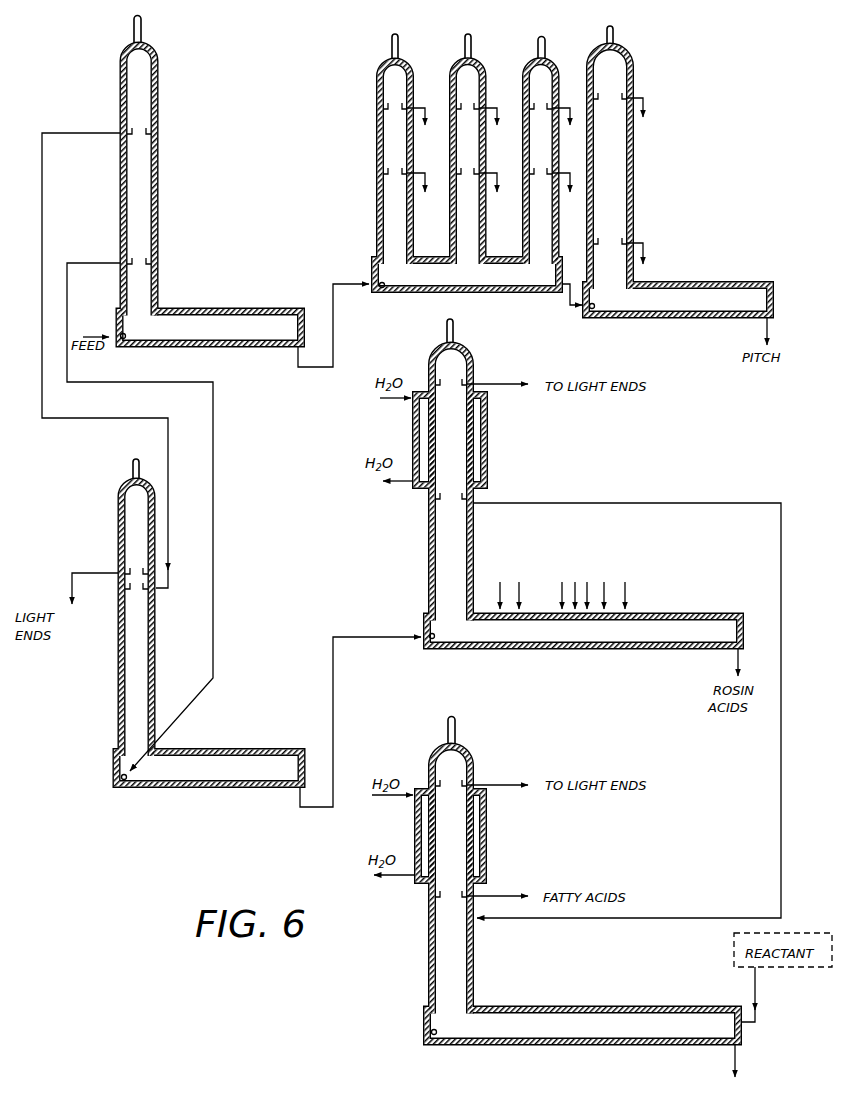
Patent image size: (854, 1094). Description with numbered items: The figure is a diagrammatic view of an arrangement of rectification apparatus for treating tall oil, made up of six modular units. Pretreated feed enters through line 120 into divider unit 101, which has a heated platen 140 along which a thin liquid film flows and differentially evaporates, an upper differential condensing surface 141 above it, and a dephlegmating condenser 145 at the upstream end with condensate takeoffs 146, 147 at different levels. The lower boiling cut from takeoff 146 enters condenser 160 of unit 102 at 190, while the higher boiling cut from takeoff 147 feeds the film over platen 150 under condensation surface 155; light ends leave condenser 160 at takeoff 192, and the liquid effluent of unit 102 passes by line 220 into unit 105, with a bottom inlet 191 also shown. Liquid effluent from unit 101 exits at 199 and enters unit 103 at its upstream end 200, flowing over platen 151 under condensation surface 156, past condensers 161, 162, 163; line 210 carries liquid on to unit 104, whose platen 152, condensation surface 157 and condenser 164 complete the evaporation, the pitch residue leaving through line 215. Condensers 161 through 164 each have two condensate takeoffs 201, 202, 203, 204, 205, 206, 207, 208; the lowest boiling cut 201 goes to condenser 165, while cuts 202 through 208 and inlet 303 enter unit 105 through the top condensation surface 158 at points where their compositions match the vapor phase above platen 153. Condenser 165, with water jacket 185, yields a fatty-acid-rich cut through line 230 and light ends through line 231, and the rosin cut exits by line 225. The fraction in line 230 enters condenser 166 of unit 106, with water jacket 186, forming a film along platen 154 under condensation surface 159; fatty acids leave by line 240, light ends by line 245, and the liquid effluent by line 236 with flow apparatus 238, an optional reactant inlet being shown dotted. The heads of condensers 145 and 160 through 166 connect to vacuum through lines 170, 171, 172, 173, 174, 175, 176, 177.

The differential evaporator-condenser divider unit 101 is at (211, 173).
The unit 102 is at (181, 647).
The unit 103 is at (461, 150).
The unit 104 is at (678, 165).
The unit 105 is at (575, 480).
The unit 106 is at (578, 863).
The line 120 is at (89, 331).
The heated platen 140 is at (203, 347).
The differential condensing surface 141 is at (236, 284).
The dephlegmating condenser 145 is at (158, 93).
The condensate takeoff 146 is at (90, 132).
The condensate takeoff 147 is at (112, 262).
The differential evaporation platen 150 is at (205, 788).
The differential evaporation platen 151 is at (508, 293).
The differential evaporation platen 152 is at (641, 318).
The differential evaporation platen 153 is at (562, 648).
The differential evaporation platen 154 is at (513, 1045).
The condensation surface 155 is at (258, 749).
The condensation surface 156 is at (500, 258).
The condensation surface 157 is at (722, 282).
The differential condensation surface 158 is at (688, 614).
The condensation surface 159 is at (693, 1008).
The condenser 160 is at (157, 653).
The condenser 161 is at (393, 75).
The condenser 162 is at (465, 75).
The condenser 163 is at (545, 75).
The condenser 164 is at (615, 65).
The condenser 165 is at (476, 479).
The condenser 166 is at (458, 760).
The vacuum line 170 is at (142, 28).
The vacuum line 171 is at (132, 469).
The vacuum line 172 is at (390, 45).
The vacuum line 173 is at (464, 45).
The vacuum line 174 is at (535, 52).
The vacuum line 175 is at (613, 40).
The vacuum line 176 is at (447, 325).
The vacuum line 177 is at (451, 718).
The water jacket 185 is at (487, 443).
The water jacket 186 is at (487, 838).
The inlet to condenser 160 190 is at (163, 590).
The bottom inlet of second unit 191 is at (128, 790).
The condensate takeoff 192 is at (115, 572).
The liquid effluent exit 199 is at (290, 366).
The upstream liquid flow end 200 is at (378, 291).
The condensate takeoff 201 is at (426, 583).
The condensate takeoff 202 is at (519, 582).
The condensate takeoff 203 is at (573, 132).
The condensate takeoff 204 is at (500, 582).
The condensate takeoff 205 is at (587, 582).
The condensate takeoff 206 is at (604, 582).
The condensate takeoff 207 is at (575, 582).
The condensate takeoff 208 is at (625, 582).
The line 210 is at (570, 305).
The line 215 is at (772, 322).
The line 220 is at (333, 672).
The line 225 is at (736, 664).
The condensate takeoff line 230 is at (490, 503).
The line 231 is at (508, 391).
The line 236 is at (739, 1058).
The flow apparatus 238 is at (757, 985).
The line 240 is at (505, 893).
The line 245 is at (505, 783).
The side stream inlet line 303 is at (570, 573).